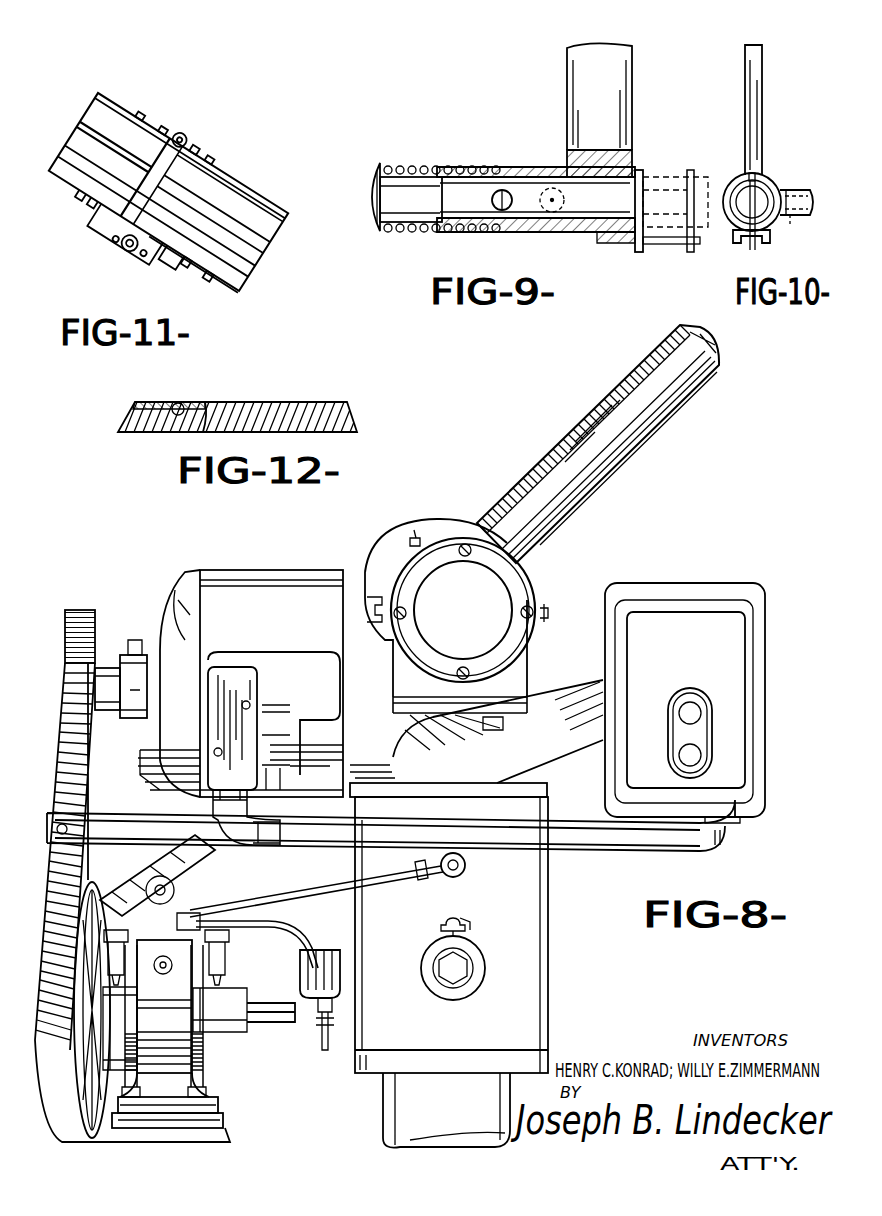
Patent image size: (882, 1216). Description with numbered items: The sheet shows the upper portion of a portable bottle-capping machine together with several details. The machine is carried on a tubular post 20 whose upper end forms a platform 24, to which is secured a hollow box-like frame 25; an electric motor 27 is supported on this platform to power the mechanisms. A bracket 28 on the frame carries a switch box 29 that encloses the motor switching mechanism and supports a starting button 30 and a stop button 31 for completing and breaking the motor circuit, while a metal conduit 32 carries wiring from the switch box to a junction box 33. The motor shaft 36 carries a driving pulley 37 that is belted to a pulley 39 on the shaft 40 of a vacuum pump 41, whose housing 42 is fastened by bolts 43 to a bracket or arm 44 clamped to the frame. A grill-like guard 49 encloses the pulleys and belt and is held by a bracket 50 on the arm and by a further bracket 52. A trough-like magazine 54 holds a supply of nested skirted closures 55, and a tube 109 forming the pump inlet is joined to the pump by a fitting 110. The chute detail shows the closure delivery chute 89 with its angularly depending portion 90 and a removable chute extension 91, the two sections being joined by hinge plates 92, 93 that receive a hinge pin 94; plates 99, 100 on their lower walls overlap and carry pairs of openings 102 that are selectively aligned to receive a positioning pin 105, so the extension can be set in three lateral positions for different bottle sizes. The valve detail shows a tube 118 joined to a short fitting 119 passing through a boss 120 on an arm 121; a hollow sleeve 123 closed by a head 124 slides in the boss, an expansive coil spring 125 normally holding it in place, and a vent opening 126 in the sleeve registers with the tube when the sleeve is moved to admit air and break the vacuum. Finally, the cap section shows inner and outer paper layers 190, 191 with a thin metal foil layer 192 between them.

In FIG. 8, the tubular member or post 20 is at (383, 1108).
In FIG. 8, the platform or uniplanar portion 24 is at (540, 1055).
In FIG. 8, the supplemental hollow or box-like frame 25 is at (548, 972).
In FIG. 8, the motor 27 is at (300, 550).
In FIG. 8, the bracket 28 is at (578, 695).
In FIG. 8, the box-like housing (switch box) 29 is at (722, 585).
In FIG. 8, the starting button 30 is at (688, 700).
In FIG. 8, the stop button 31 is at (700, 748).
In FIG. 8, the metal conduit 32 is at (580, 852).
In FIG. 8, the junction box 33 is at (225, 672).
In FIG. 8, the motor shaft 36 is at (140, 640).
In FIG. 8, the driving pulley 37 is at (104, 720).
In FIG. 8, the pulley 39 is at (85, 915).
In FIG. 8, the shaft 40 is at (272, 1023).
In FIG. 8, the vacuum pump 41 is at (205, 1050).
In FIG. 8, the housing 42 is at (164, 1018).
In FIG. 8, the bolts 43 is at (215, 1095).
In FIG. 8, the bracket or arm 44 is at (225, 1128).
In FIG. 8, the grill-like guard or shield 49 is at (62, 720).
In FIG. 8, the bracket 50 is at (70, 1138).
In FIG. 8, the bracket 52 is at (172, 846).
In FIG. 8, the magazine 54 is at (672, 426).
In FIG. 8, the skirted caps or closures 55 is at (552, 447).
In FIG. 8, the tube 109 is at (300, 914).
In FIG. 8, the fitting 110 is at (226, 945).
In FIG. 11, the closure delivery chute 89 is at (58, 186).
In FIG. 11, the angularly depending chute portion 90 is at (118, 118).
In FIG. 11, the chute extension 91 is at (250, 196).
In FIG. 11, the hinge plate 92 is at (165, 124).
In FIG. 11, the hinge plate 93 is at (210, 168).
In FIG. 11, the pivot or hinge pin 94 is at (188, 141).
In FIG. 11, the plate 99 is at (88, 232).
In FIG. 11, the plate 100 is at (165, 266).
In FIG. 11, the openings 102 is at (112, 244).
In FIG. 11, the securing or positioning pin 105 is at (124, 252).
In FIG. 10, the tube 118 is at (795, 190).
In FIG. 9, the short metal tube or fitting 119 is at (510, 235).
In FIG. 10, the short metal tube or fitting 119 is at (790, 226).
In FIG. 9, the boss portion 120 is at (560, 160).
In FIG. 10, the boss portion 120 is at (740, 243).
In FIG. 9, the arm or member 121 is at (625, 50).
In FIG. 10, the arm or member 121 is at (762, 50).
In FIG. 9, the sleeve or hollow valve member 123 is at (542, 212).
In FIG. 10, the sleeve or hollow valve member 123 is at (734, 180).
In FIG. 9, the head 124 is at (375, 215).
In FIG. 9, the expansive coil spring 125 is at (432, 146).
In FIG. 9, the vent opening 126 is at (500, 190).
In FIG. 12, the inner paper layer 190 is at (168, 402).
In FIG. 12, the outer paper layer 191 is at (184, 406).
In FIG. 12, the metal foil layer 192 is at (128, 434).